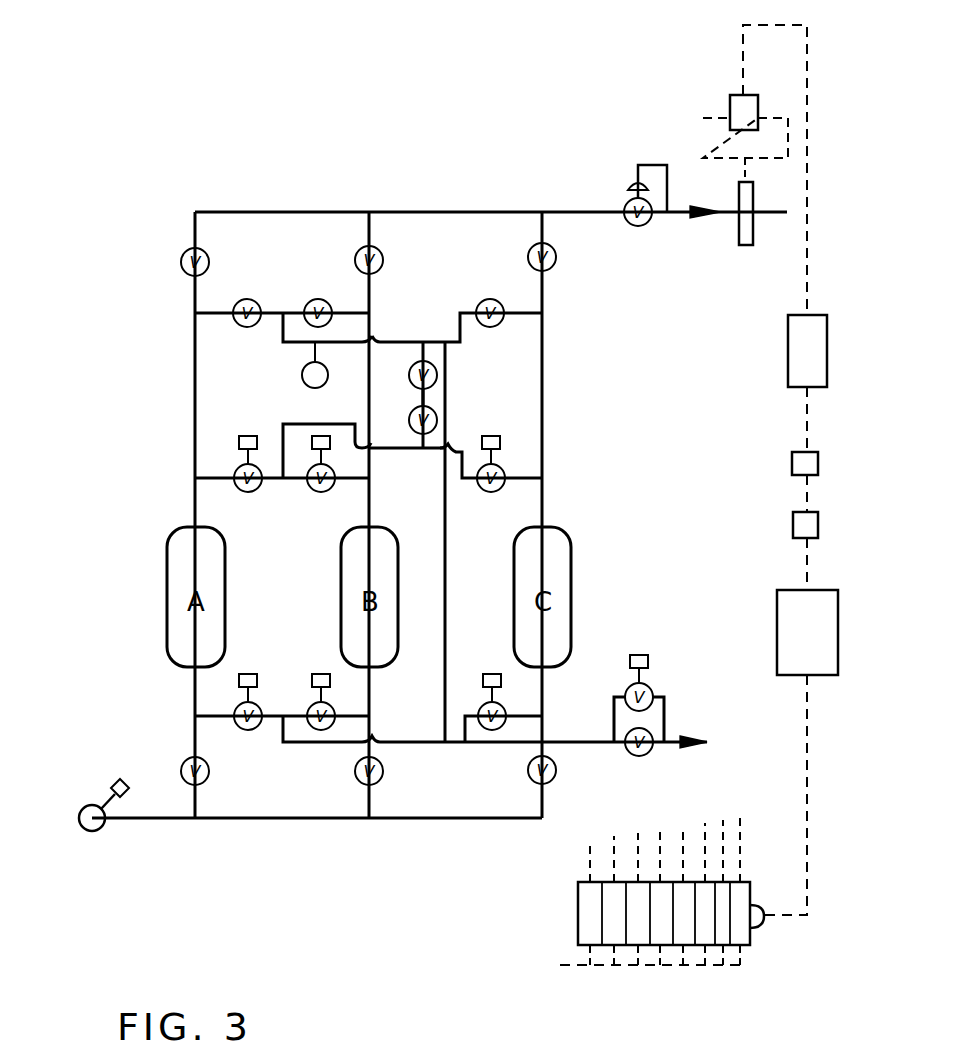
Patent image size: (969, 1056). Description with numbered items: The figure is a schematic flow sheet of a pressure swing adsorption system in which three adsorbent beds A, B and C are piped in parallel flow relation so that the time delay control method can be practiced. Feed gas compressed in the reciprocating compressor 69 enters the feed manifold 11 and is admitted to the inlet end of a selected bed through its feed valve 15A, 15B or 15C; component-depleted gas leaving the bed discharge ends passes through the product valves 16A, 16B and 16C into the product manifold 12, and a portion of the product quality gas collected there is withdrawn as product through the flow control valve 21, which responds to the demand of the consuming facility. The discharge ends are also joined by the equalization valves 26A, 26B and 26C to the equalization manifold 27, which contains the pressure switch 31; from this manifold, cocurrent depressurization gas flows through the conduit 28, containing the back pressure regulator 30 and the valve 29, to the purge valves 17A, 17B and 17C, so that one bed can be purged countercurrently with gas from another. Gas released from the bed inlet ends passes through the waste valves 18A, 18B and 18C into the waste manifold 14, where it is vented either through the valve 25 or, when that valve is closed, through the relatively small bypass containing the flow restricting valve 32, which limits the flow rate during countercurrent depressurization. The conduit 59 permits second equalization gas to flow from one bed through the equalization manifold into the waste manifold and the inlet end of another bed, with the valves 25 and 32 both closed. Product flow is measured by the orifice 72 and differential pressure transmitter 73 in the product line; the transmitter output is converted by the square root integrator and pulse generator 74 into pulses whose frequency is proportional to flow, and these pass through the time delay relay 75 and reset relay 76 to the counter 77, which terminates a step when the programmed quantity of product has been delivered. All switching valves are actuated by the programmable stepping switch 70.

The feed manifold 11 is at (167, 822).
The product manifold 12 is at (598, 190).
The waste manifold 14 is at (407, 743).
The feed valve for bed A 15A is at (209, 771).
The feed valve for bed B 15B is at (382, 779).
The feed valve for bed C 15C is at (555, 778).
The product valve for bed A 16A is at (209, 258).
The product valve for bed B 16B is at (383, 255).
The product valve for bed C 16C is at (556, 252).
The purge valve for bed A 17A is at (236, 490).
The purge valve for bed B 17B is at (329, 490).
The purge valve for bed C 17C is at (481, 492).
The waste valve for bed A 18A is at (259, 703).
The waste valve for bed B 18B is at (337, 707).
The waste valve for bed C 18C is at (503, 708).
The flow control valve 21 is at (650, 222).
The waste valve 25 is at (651, 752).
The equalization valve for bed A 26A is at (266, 300).
The equalization valve for bed B 26B is at (338, 300).
The equalization valve for bed C 26C is at (482, 302).
The equalization manifold 27 is at (395, 341).
The conduit 28 is at (419, 398).
The valve 29 is at (413, 425).
The back pressure regulator 30 is at (410, 370).
The pressure switch 31 is at (302, 372).
The flow restricting valve 32 is at (651, 688).
The conduit 59 is at (447, 392).
The reciprocating compressor 69 is at (79, 815).
The programmable stepping switch 70 is at (752, 940).
The orifice 72 is at (753, 238).
The differential pressure transmitter 73 is at (758, 100).
The square root integrator and pulse generator 74 is at (818, 318).
The time delay relay 75 is at (810, 457).
The reset relay 76 is at (801, 523).
The counter 77 is at (785, 613).